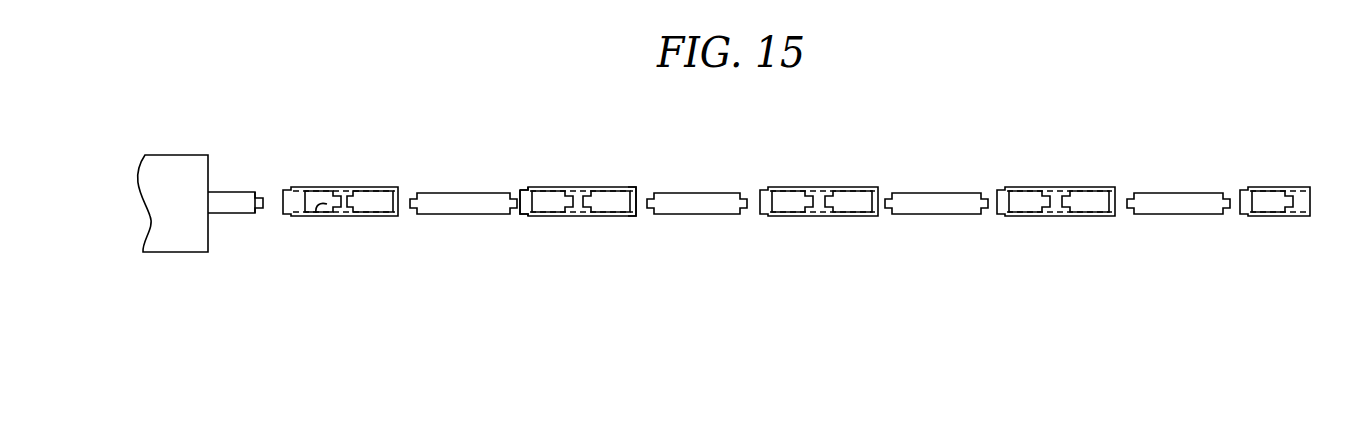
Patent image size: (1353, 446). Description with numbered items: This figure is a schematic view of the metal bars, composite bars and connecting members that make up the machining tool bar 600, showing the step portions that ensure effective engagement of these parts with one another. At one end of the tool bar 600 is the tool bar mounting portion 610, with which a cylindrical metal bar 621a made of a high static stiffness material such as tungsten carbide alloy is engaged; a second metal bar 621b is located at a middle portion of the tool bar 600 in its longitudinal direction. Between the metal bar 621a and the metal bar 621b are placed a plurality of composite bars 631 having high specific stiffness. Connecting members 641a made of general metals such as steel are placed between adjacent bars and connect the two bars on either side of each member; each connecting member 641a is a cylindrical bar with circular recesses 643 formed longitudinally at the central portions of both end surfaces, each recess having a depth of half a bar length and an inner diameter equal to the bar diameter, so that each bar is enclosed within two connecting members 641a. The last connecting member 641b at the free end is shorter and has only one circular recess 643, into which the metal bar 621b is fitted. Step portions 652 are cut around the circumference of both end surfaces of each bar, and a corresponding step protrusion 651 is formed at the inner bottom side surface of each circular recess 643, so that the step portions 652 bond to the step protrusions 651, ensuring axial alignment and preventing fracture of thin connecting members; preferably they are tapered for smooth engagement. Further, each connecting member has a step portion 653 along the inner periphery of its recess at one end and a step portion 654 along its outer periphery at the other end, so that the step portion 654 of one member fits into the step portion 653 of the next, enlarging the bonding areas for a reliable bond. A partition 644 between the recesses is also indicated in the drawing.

The tool bar 600 is at (683, 184).
The tool bar mounting portion 610 is at (200, 162).
The metal bar 621a is at (232, 203).
The metal bar 621b is at (1225, 210).
The composite bar 631 is at (457, 203).
The connecting member 641a is at (382, 183).
The last connecting member 641b is at (1302, 192).
The circular recess 643 is at (393, 198).
The coupling partition 644 is at (342, 195).
The step protrusion 651 is at (318, 215).
The step portion 652 is at (260, 210).
The step portion 653 is at (637, 192).
The step portion 654 is at (522, 192).